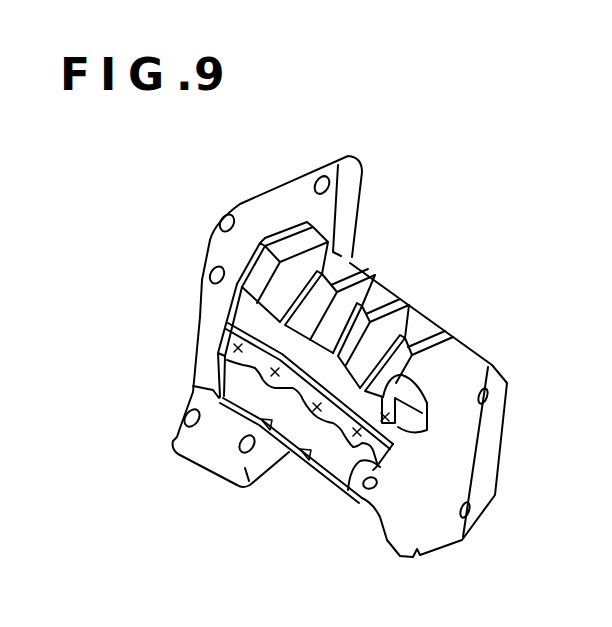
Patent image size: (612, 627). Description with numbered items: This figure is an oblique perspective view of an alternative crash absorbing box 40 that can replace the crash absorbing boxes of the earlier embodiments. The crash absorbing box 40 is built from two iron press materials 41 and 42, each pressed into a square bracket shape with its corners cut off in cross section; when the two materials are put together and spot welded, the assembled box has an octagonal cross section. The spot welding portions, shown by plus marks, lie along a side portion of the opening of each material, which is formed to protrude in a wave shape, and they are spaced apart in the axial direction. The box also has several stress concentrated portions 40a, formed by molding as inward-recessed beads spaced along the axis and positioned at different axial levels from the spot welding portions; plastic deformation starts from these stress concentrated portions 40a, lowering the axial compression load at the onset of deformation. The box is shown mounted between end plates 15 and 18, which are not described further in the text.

The front plate 15 is at (494, 440).
The rear plate 18 is at (351, 191).
The crash absorbing box 40 is at (352, 366).
The stress concentrated portions 40a is at (417, 424).
The iron press material 41 is at (440, 330).
The iron press material 42 is at (331, 473).